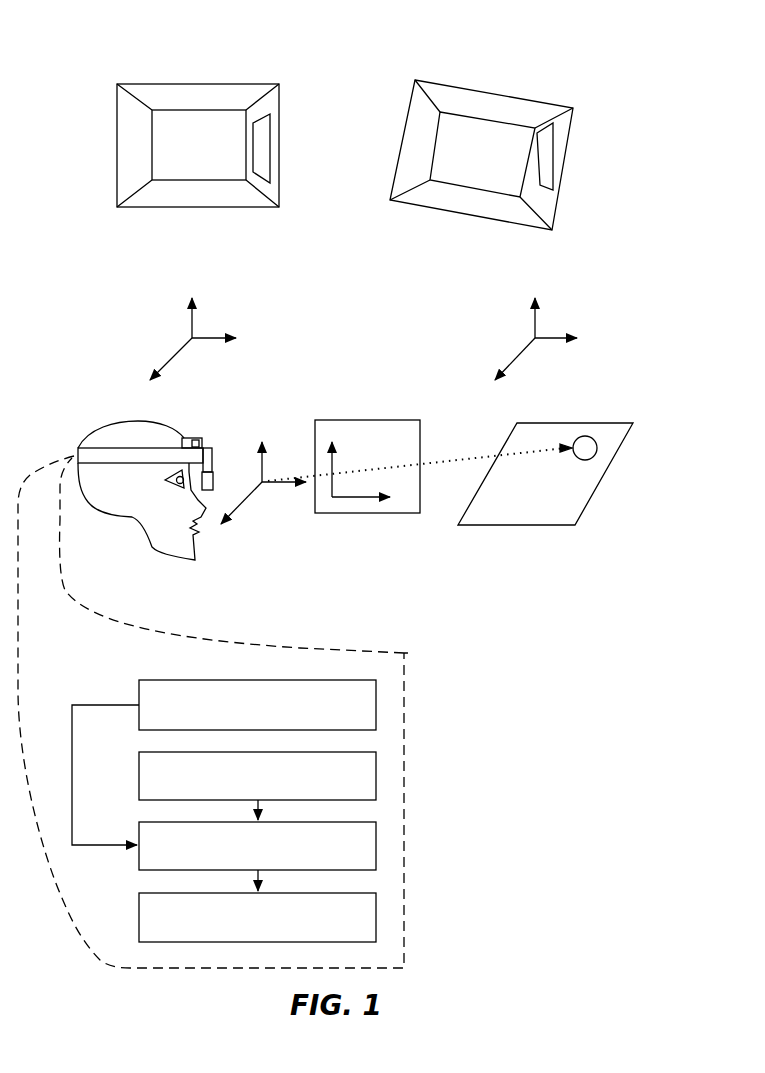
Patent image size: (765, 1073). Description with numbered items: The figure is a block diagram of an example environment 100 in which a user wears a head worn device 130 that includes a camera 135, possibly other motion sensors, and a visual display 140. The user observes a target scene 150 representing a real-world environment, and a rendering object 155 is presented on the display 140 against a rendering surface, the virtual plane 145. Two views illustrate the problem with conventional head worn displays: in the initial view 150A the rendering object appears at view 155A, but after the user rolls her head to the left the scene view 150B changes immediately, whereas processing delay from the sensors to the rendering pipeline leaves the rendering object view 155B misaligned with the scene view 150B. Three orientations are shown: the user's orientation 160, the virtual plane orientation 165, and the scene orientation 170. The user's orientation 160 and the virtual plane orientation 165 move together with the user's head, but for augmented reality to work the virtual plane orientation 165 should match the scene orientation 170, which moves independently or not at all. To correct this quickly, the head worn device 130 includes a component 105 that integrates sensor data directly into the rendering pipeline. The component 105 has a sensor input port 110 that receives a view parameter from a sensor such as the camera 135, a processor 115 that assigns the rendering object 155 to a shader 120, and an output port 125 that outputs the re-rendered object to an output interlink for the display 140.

The environment 100 is at (566, 20).
The component 105 is at (404, 653).
The sensor input port 110 is at (376, 705).
The processor 115 is at (376, 776).
The shader 120 is at (376, 848).
The output port 125 is at (376, 918).
The head worn device 130 is at (78, 448).
The camera 135 is at (188, 438).
The visual display 140 is at (213, 470).
The virtual plane 145 is at (365, 420).
The target scene 150 is at (520, 525).
The view of scene 150A is at (117, 84).
The scene view 150B is at (415, 80).
The rendering object 155 is at (585, 436).
The view of rendering object 155A is at (270, 147).
The rendering object view 155B is at (555, 160).
The user's orientation 160 is at (192, 338).
The virtual plane orientation 165 is at (245, 500).
The scene orientation 170 is at (535, 338).